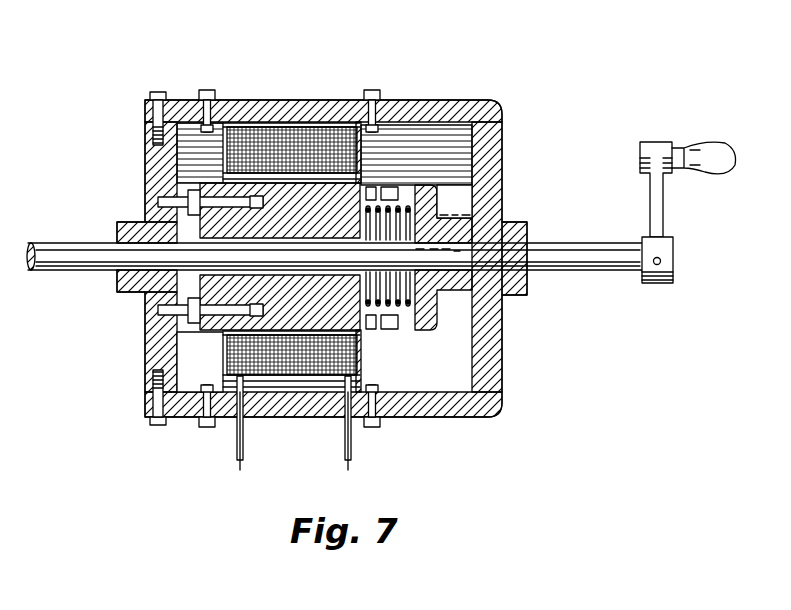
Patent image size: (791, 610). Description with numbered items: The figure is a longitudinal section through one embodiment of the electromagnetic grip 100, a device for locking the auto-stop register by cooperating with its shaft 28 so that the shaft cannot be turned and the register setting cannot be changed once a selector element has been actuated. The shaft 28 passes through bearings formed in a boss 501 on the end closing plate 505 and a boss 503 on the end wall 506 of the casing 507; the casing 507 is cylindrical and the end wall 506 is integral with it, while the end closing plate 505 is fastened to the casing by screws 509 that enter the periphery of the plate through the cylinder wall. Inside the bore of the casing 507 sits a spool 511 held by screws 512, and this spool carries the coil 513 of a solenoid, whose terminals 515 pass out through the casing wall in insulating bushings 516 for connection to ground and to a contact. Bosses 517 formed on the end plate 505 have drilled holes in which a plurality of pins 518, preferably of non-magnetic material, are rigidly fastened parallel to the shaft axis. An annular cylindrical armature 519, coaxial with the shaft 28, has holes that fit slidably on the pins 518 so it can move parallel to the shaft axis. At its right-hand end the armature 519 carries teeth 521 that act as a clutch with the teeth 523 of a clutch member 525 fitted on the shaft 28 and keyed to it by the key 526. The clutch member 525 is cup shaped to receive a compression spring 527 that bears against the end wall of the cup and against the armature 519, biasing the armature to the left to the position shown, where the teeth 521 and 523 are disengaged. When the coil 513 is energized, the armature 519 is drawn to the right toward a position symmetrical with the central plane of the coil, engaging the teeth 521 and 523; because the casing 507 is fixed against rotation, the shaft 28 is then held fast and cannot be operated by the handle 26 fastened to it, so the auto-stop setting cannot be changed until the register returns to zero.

The electromagnetic grip 100 is at (506, 91).
The handle 26 is at (657, 220).
The shaft 28 is at (634, 286).
The boss 501 is at (128, 222).
The boss 503 is at (514, 232).
The end closing plate 505 is at (145, 138).
The end wall 506 is at (488, 136).
The casing 507 is at (270, 108).
The screws 509 is at (157, 93).
The spool 511 is at (372, 379).
The screws 512 is at (210, 90).
The coil 513 is at (304, 148).
The terminals 515 is at (238, 466).
The insulating bushings 516 is at (245, 430).
The bosses 517 is at (178, 158).
The pins 518 is at (158, 201).
The armature 519 is at (245, 238).
The teeth 521 is at (370, 329).
The teeth 523 is at (395, 330).
The clutch member 525 is at (437, 201).
The key 526 is at (458, 255).
The compression spring 527 is at (440, 215).